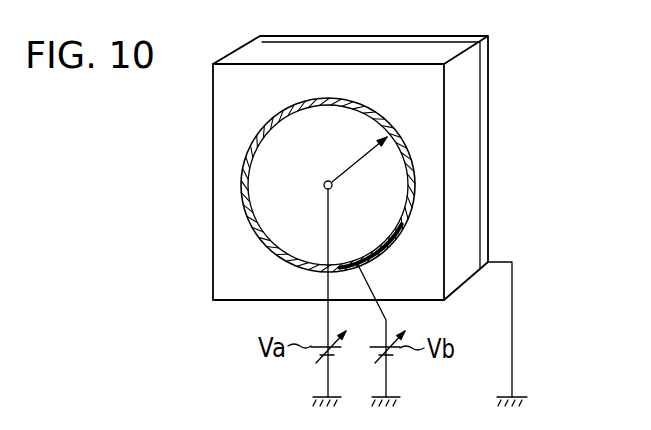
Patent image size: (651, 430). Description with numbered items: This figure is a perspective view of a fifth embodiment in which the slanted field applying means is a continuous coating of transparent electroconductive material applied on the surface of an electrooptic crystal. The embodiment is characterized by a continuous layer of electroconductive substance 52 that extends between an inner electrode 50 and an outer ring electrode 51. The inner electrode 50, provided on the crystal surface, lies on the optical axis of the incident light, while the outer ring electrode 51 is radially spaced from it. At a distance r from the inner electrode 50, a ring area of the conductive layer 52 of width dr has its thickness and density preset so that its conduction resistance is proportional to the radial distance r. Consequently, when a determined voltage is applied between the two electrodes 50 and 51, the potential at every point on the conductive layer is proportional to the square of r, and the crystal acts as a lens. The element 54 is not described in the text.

The inner electrode 50 is at (328, 180).
The outer ring electrode 51 is at (463, 153).
The continuous layer of electroconductive substance 52 is at (272, 128).
The back plate 54 is at (487, 73).